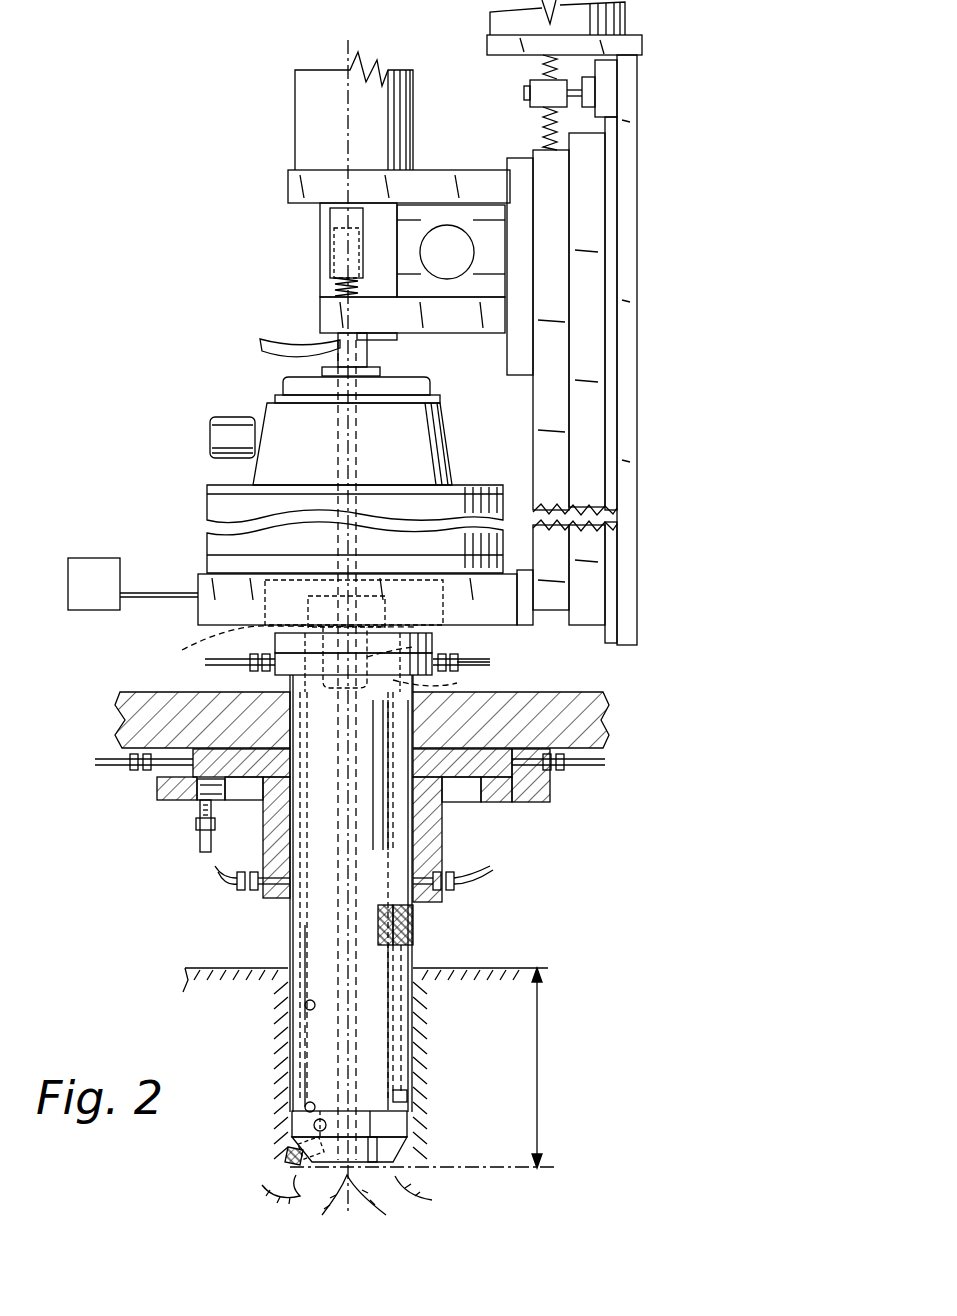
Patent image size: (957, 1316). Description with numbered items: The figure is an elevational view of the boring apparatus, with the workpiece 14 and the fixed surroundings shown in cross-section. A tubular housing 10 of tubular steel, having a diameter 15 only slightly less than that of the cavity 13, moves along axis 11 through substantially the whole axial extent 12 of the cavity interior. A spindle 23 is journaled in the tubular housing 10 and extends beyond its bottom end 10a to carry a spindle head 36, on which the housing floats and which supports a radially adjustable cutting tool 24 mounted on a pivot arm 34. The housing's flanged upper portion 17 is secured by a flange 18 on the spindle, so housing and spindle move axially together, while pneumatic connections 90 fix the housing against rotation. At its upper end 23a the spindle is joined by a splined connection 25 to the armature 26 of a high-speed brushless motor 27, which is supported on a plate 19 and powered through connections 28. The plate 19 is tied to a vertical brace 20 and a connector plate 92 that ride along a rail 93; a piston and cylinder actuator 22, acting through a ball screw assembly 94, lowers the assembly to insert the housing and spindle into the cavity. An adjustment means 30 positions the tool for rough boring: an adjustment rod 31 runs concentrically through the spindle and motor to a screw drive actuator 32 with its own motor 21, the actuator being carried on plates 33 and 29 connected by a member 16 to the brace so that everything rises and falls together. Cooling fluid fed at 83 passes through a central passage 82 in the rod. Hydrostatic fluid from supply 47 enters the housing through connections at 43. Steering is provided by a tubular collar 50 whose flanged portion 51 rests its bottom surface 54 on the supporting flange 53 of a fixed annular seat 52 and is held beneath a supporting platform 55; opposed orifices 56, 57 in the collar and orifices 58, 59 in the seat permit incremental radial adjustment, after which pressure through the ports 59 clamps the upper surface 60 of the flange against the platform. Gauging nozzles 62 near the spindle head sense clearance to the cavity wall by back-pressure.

The tubular housing 10 is at (403, 936).
The bottom end of tubular housing 10a is at (403, 1103).
The axis 11 is at (453, 1168).
The axial extent 12 is at (539, 1068).
The cavity 13 is at (292, 1043).
The workpiece 14 is at (477, 992).
The diameter of tubular housing 15 is at (410, 770).
The member 16 is at (520, 253).
The flanged upper portion 17 is at (420, 648).
The flange 18 is at (436, 638).
The plate 19 is at (522, 616).
The vertical brace 20 is at (557, 474).
The motor of screw drive actuator 21 is at (378, 116).
The piston and cylinder actuator 22 is at (560, 27).
The spindle 23 is at (392, 910).
The upper end of spindle 23a is at (385, 632).
The cutting tool 24 is at (276, 1155).
The splined connection 25 is at (302, 656).
The armature 26 is at (360, 605).
The brushless motor 27 is at (473, 486).
The power connections 28 is at (242, 430).
The plate 29 is at (447, 325).
The adjustment means 30 is at (376, 1121).
The adjustment rod 31 is at (355, 461).
The screw drive actuator 32 is at (318, 220).
The plate 33 is at (431, 162).
The pivot arm 34 is at (315, 1128).
The spindle head 36 is at (390, 1149).
The pressure supply connection 43 is at (488, 662).
The hydrostatic fluid pressure supply 47 is at (420, 684).
The tubular collar 50 is at (433, 853).
The flanged portion of collar 51 is at (481, 749).
The annular seat 52 is at (538, 790).
The supporting flange of seat 53 is at (498, 793).
The bottom surface of collar flange 54 is at (453, 779).
The supporting platform 55 is at (552, 707).
The orifice 56 is at (282, 900).
The orifice 57 is at (437, 906).
The orifice 58 is at (177, 800).
The orifice 59 is at (220, 793).
The upper surface of collar flange 60 is at (200, 748).
The gauging nozzles 62 is at (312, 1000).
The central passage 82 is at (352, 427).
The fluid feed 83 is at (343, 343).
The pneumatic connections 90 is at (268, 655).
The connector plate 92 is at (587, 336).
The rail 93 is at (625, 182).
The ball screw assembly 94 is at (528, 88).